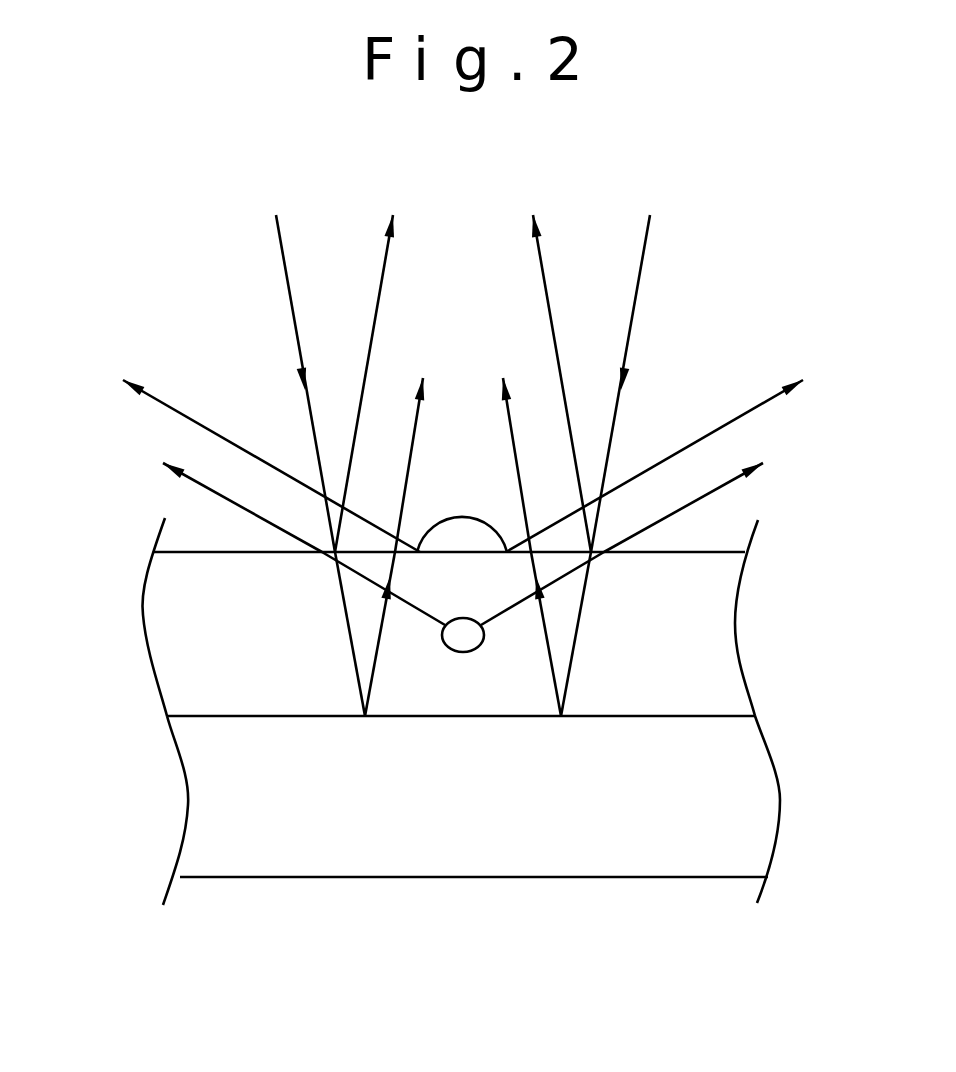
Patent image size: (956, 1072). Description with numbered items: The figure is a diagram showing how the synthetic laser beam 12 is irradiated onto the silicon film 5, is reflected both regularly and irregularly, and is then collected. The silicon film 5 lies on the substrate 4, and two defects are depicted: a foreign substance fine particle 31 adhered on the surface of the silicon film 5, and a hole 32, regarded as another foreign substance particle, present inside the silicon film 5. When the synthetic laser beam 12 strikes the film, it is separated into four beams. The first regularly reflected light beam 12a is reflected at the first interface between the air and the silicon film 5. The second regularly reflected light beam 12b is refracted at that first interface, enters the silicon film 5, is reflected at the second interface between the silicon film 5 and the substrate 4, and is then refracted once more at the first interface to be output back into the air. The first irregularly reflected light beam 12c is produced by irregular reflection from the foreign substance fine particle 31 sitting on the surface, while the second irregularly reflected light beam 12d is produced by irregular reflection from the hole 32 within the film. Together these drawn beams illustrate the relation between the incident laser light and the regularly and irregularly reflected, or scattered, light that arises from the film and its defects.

The substrate 4 is at (768, 792).
The silicon film 5 is at (727, 625).
The synthetic laser beam 12 is at (637, 297).
The first regularly reflected light beam 12a is at (387, 272).
The second regularly reflected light beam 12b is at (507, 408).
The first irregularly reflected light beam 12c is at (168, 408).
The second irregularly reflected light beam 12d is at (198, 485).
The foreign substance fine particle 31 is at (459, 520).
The hole 32 is at (460, 642).